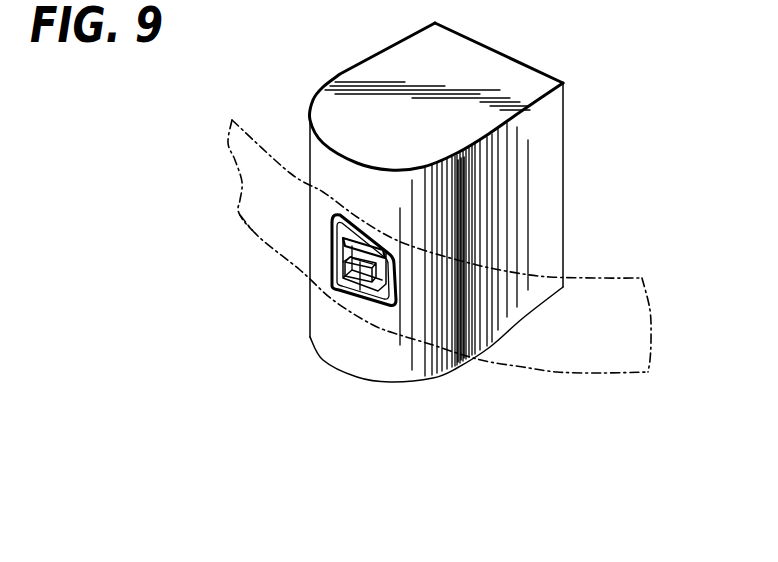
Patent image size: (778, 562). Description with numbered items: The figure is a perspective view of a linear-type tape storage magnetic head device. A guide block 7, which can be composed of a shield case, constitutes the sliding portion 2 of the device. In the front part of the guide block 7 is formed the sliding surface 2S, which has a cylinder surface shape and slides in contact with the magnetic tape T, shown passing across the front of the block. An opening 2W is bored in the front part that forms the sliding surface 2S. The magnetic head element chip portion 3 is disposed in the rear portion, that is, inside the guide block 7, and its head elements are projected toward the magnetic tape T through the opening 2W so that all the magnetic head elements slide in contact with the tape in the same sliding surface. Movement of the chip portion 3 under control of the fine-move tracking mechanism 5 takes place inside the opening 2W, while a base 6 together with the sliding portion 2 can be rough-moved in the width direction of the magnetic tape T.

The sliding portion 2 is at (470, 358).
The sliding surface 2S is at (347, 342).
The opening 2W is at (342, 207).
The magnetic head element chip portion 3 is at (350, 285).
The fine-move tracking mechanism 5 is at (393, 258).
The base 6 is at (371, 250).
The guide block 7 is at (550, 142).
The magnetic tape T is at (244, 178).